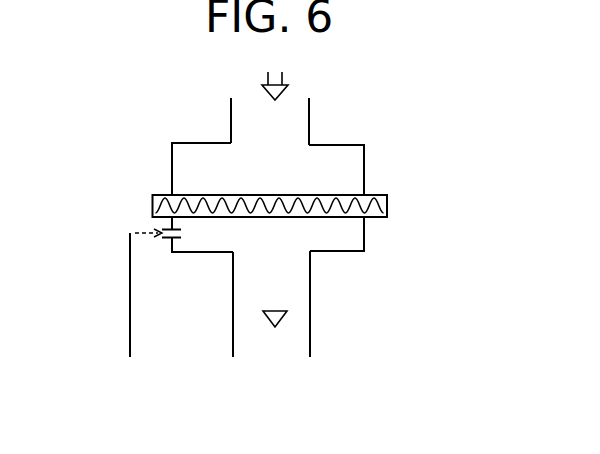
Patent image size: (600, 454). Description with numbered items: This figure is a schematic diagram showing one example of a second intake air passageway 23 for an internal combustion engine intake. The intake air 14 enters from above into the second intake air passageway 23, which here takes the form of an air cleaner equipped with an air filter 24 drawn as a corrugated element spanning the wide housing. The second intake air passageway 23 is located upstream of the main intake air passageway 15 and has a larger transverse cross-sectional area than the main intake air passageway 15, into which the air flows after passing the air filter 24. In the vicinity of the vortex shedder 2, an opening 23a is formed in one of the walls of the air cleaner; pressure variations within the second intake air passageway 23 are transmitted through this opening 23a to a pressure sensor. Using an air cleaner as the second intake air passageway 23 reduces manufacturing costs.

The intake air 14 is at (292, 73).
The second intake air passageway 23 is at (365, 155).
The air filter 24 is at (388, 202).
The opening 23a is at (158, 223).
The vortex shedder 2 is at (280, 308).
The main intake air passageway 15 is at (315, 325).